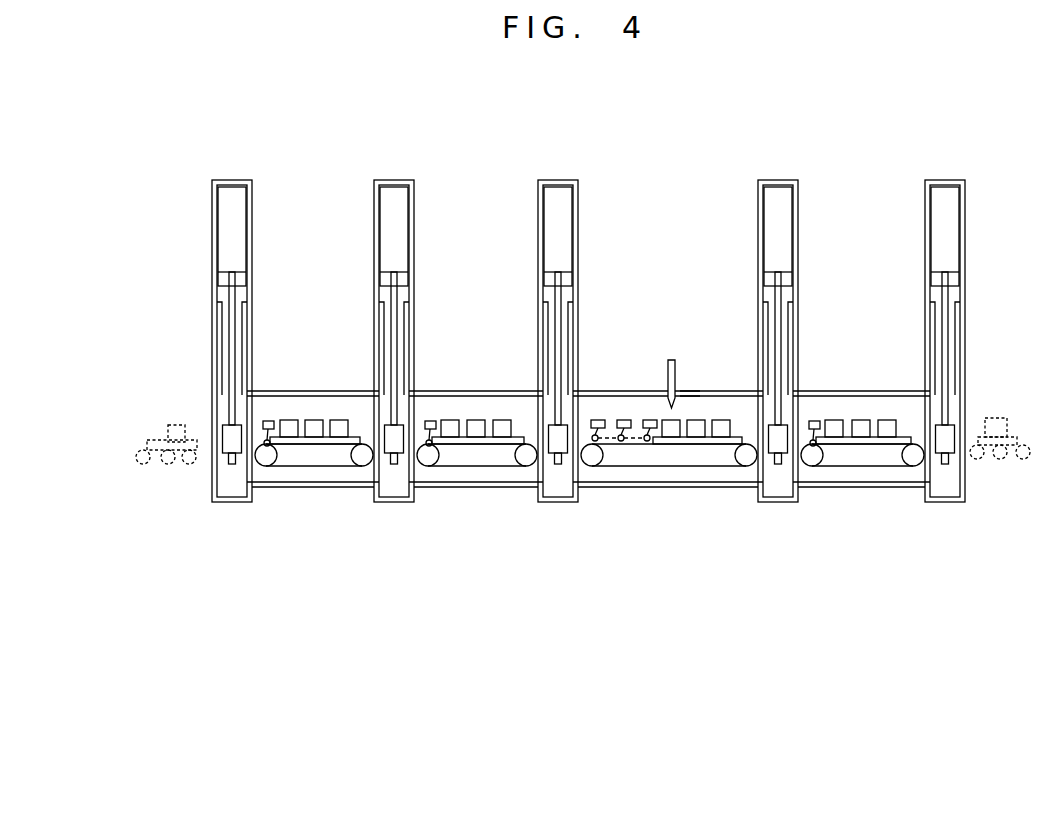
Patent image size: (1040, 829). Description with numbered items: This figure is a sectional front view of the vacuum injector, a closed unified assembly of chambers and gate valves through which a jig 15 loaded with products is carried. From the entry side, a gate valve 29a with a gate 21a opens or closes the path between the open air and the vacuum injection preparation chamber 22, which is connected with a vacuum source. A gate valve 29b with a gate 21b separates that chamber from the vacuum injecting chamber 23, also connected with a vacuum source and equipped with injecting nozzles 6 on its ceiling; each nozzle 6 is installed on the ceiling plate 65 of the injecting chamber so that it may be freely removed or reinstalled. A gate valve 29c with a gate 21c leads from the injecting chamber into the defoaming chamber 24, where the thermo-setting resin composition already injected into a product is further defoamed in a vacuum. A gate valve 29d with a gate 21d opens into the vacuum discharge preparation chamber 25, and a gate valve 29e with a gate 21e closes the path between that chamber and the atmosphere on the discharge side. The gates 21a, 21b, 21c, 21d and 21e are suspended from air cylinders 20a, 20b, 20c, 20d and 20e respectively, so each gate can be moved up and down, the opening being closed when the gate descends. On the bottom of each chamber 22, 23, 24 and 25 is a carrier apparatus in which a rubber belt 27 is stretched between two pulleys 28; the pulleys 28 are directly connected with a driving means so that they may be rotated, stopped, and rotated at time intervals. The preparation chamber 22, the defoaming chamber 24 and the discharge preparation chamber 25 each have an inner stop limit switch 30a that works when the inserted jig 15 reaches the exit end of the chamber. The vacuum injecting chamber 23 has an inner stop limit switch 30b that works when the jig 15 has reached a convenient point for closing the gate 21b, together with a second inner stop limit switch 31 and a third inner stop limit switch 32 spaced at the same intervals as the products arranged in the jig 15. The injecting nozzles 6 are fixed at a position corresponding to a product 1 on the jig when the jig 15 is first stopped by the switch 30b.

The product 1 is at (867, 420).
The injecting nozzle 6 is at (677, 372).
The jig 15 is at (852, 444).
The air cylinder 20a is at (940, 210).
The air cylinder 20b is at (770, 212).
The air cylinder 20c is at (550, 220).
The air cylinder 20d is at (383, 222).
The air cylinder 20e is at (227, 230).
The gate 21a is at (937, 405).
The gate 21b is at (765, 407).
The gate 21c is at (545, 408).
The gate 21d is at (410, 410).
The gate 21e is at (243, 412).
The vacuum injection preparation chamber 22 is at (898, 487).
The vacuum injecting chamber 23 is at (665, 487).
The defoaming chamber 24 is at (498, 487).
The vacuum discharge preparation chamber 25 is at (284, 488).
The rubber belt 27 is at (311, 466).
The pulley 28 is at (357, 466).
The gate valve 29a is at (965, 290).
The gate valve 29b is at (798, 290).
The gate valve 29c is at (575, 292).
The gate valve 29d is at (412, 292).
The gate valve 29e is at (248, 292).
The inner stop limit switch 30a is at (268, 421).
The inner stop limit switch 30b is at (647, 419).
The second inner stop limit switch 31 is at (623, 419).
The third inner stop limit switch 32 is at (598, 419).
The ceiling plate 65 is at (698, 391).